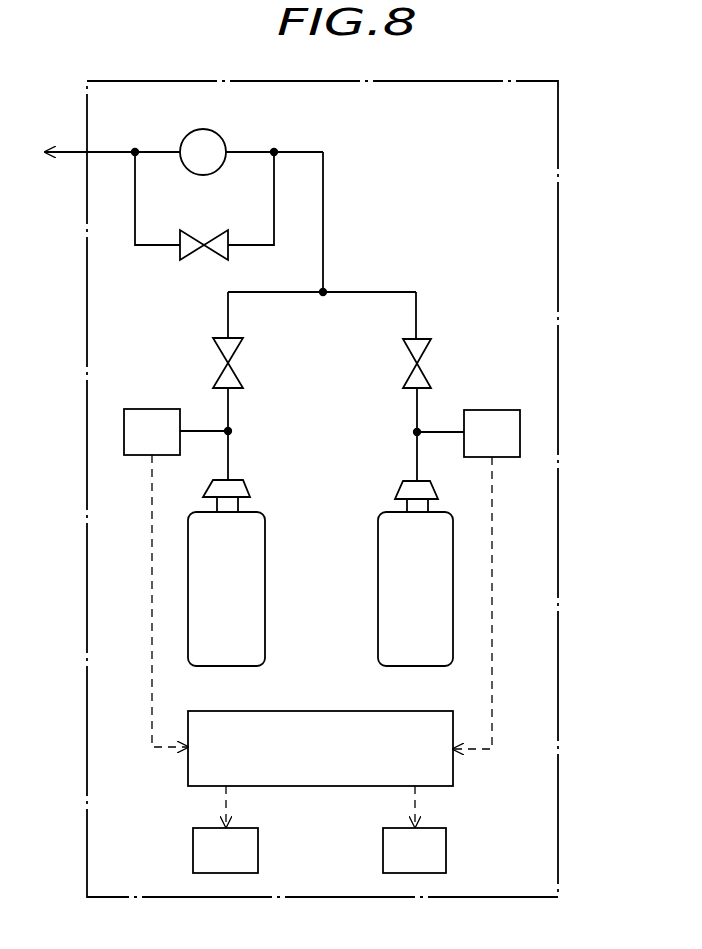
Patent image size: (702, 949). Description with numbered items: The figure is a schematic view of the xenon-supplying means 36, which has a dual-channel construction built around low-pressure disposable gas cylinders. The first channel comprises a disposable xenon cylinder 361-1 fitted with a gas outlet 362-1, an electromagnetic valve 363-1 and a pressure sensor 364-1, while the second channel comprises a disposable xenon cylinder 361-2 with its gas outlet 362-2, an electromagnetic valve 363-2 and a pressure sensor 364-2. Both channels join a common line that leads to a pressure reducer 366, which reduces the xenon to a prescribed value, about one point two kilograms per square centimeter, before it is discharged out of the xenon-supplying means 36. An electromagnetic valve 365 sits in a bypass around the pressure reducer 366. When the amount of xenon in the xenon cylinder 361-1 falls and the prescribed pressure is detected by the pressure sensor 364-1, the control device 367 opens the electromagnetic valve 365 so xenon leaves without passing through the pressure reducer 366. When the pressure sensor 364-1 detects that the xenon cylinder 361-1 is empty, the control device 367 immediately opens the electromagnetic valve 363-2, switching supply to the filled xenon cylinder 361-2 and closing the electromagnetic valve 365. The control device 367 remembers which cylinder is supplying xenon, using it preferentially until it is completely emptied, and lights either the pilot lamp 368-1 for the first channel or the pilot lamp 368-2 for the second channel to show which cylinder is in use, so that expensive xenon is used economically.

The xenon-supplying means 36 is at (553, 140).
The pressure reducer 366 is at (214, 140).
The electromagnetic valve 365 is at (205, 238).
The electromagnetic valve 363-1 is at (238, 360).
The electromagnetic valve 363-2 is at (478, 343).
The pressure sensor 364-1 is at (158, 409).
The pressure sensor 364-2 is at (490, 410).
The gas outlet 362-1 is at (232, 486).
The gas outlet 362-2 is at (410, 484).
The disposable xenon cylinder 361-1 is at (265, 578).
The disposable xenon cylinder 361-2 is at (388, 636).
The control device 367 is at (318, 786).
The pilot lamp 368-1 is at (193, 855).
The pilot lamp 368-2 is at (446, 853).